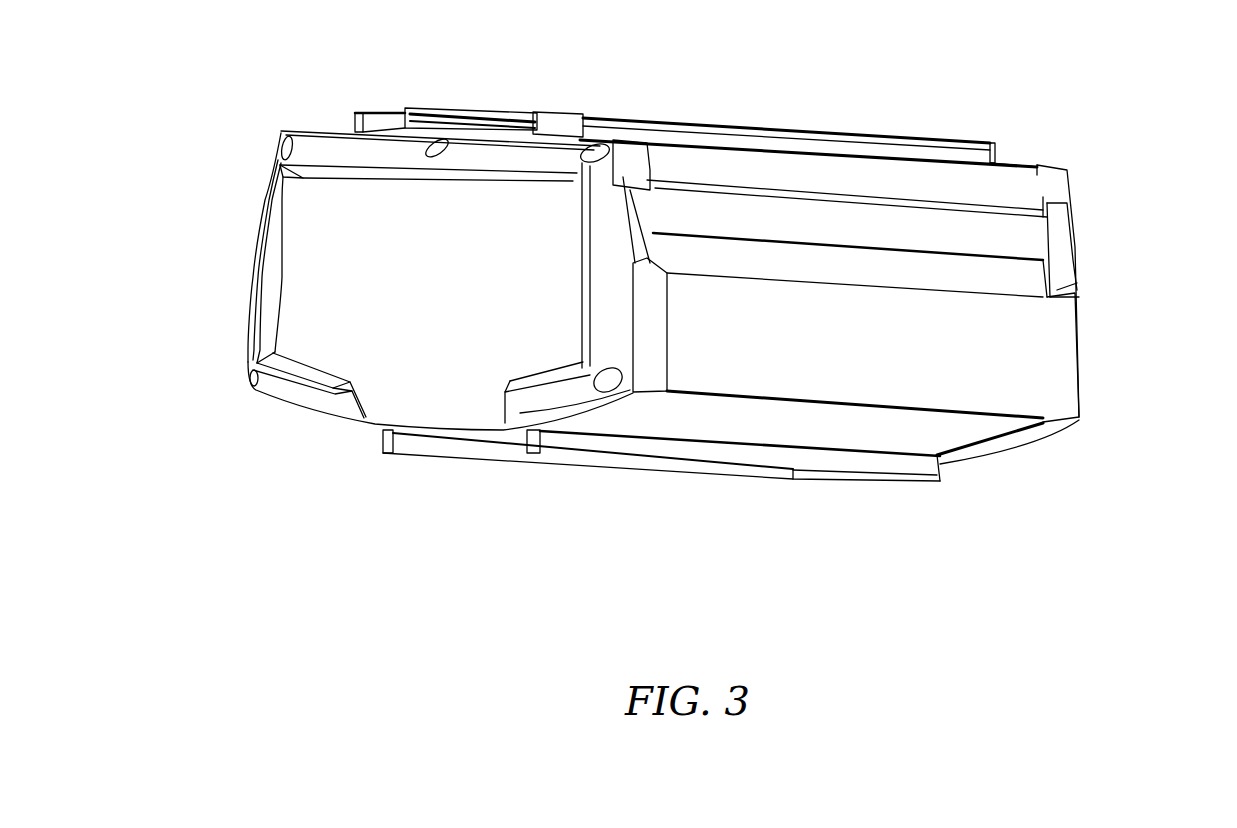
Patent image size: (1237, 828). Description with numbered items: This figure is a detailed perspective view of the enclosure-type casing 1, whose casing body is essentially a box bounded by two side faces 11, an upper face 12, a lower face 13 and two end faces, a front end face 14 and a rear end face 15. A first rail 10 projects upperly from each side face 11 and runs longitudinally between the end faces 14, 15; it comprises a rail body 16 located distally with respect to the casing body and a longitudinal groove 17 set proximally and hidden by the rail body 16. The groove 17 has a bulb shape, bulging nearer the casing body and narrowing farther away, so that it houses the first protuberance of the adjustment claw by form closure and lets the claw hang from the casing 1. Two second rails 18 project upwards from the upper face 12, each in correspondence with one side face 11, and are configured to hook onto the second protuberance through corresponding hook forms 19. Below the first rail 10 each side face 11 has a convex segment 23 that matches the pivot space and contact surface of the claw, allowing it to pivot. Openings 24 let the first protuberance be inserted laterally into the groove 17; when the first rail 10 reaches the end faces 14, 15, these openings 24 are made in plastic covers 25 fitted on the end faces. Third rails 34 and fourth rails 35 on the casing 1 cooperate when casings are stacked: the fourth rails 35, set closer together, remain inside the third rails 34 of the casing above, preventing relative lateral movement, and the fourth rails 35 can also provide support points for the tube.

The casing 1 is at (1121, 87).
The first rail 10 is at (1011, 188).
The side face 11 is at (1023, 352).
The upper face 12 is at (997, 163).
The lower face 13 is at (977, 423).
The front end face 14 is at (293, 277).
The rear end face 15 is at (1062, 323).
The rail body 16 is at (670, 187).
The longitudinal groove 17 is at (637, 230).
The second rail 18 is at (383, 113).
The hook form 19 is at (363, 113).
The convex segment 23 is at (1007, 252).
The opening 24 is at (630, 227).
The cover 25 is at (523, 412).
The third rail 34 is at (410, 443).
The fourth rail 35 is at (422, 110).